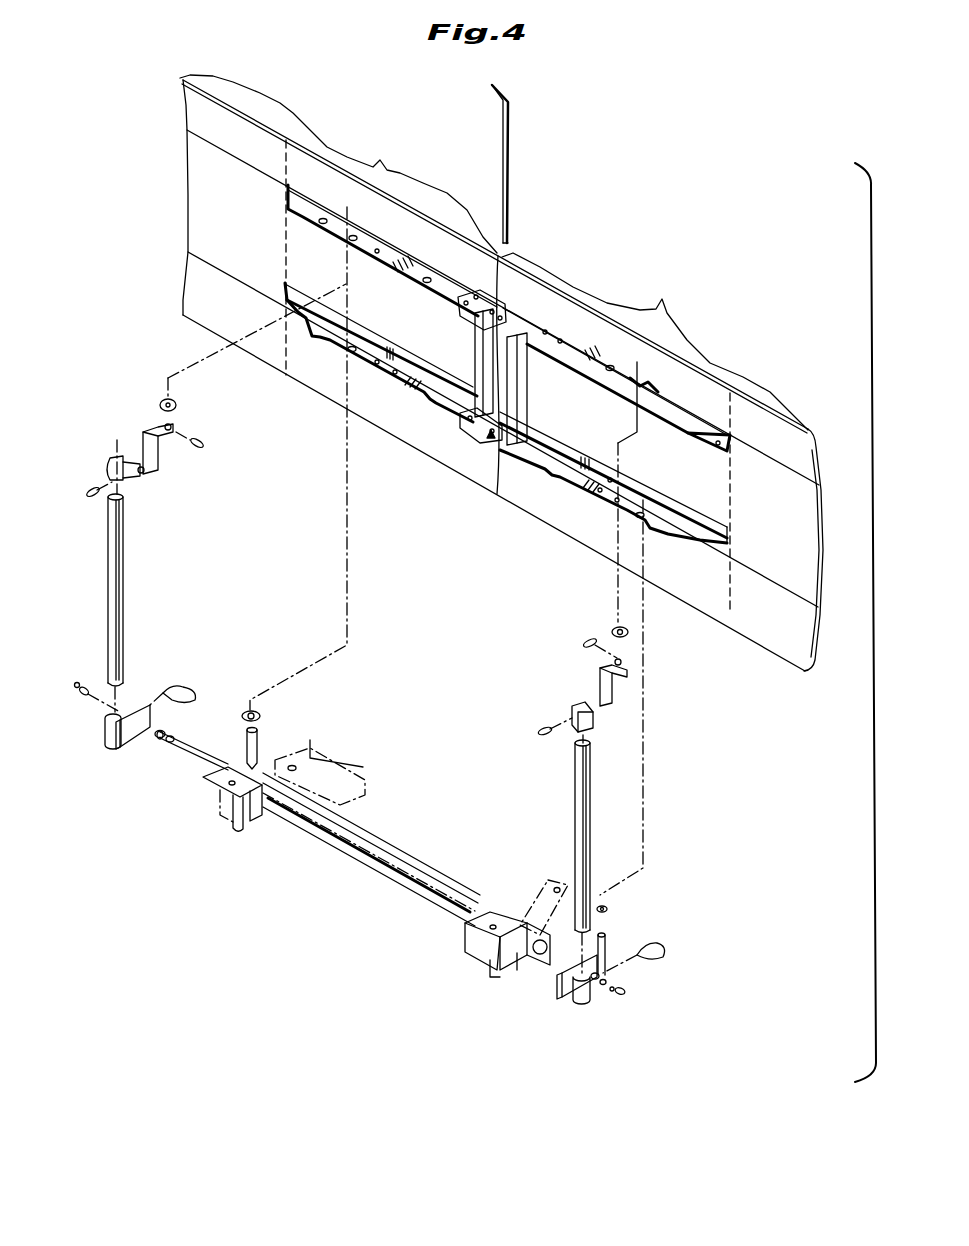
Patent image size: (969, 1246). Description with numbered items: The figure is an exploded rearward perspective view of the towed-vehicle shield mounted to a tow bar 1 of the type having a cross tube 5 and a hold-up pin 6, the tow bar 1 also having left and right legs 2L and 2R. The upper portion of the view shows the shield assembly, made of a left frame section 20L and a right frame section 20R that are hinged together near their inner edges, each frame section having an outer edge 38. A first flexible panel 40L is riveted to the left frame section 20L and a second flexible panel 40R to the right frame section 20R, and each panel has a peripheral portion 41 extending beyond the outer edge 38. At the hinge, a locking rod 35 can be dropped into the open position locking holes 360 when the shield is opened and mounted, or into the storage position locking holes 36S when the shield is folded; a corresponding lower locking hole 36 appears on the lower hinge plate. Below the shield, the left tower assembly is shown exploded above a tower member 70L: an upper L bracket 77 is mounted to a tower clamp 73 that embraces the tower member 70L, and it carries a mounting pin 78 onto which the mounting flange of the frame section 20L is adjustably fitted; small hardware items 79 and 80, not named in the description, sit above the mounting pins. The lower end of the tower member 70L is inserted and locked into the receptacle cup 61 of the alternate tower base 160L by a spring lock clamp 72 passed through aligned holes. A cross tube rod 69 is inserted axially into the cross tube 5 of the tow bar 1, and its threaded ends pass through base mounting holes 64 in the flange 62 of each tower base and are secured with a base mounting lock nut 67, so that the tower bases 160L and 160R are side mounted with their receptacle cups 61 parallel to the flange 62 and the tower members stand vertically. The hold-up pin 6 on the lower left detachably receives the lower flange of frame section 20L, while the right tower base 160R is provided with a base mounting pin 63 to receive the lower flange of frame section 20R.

The tow bar 1 is at (367, 890).
The left tow bar leg 2L is at (327, 757).
The right tow bar leg 2R is at (563, 883).
The cross tube 5 is at (383, 848).
The hold-up pin 6 is at (257, 747).
The left frame section 20L is at (374, 252).
The right frame section 20R is at (608, 387).
The locking rod 35 is at (502, 127).
The lower center bracket 36 is at (500, 442).
The storage position locking hole 36S is at (470, 313).
The open position locking hole 360 is at (502, 300).
The outer edge 38 is at (287, 252).
The first flexible panel 40L is at (338, 164).
The second flexible panel 40R is at (655, 341).
The peripheral portion 41 is at (188, 217).
The receptacle cup 61 is at (107, 737).
The flange 62 is at (138, 723).
The base mounting pin 63 is at (607, 940).
The base mounting holes 64 is at (140, 733).
The base mounting lock nut 67 is at (77, 685).
The cross tube rod 69 is at (197, 760).
The tower member 70L is at (122, 560).
The spring lock clamp 72 is at (657, 942).
The tower clamp 73 is at (142, 472).
The upper L bracket 77 is at (600, 678).
The mounting pin 78 is at (167, 427).
The washer 79 is at (177, 407).
The washer 80 is at (587, 637).
The left alternate tower base 160L is at (133, 747).
The right alternate tower base 160R is at (563, 990).